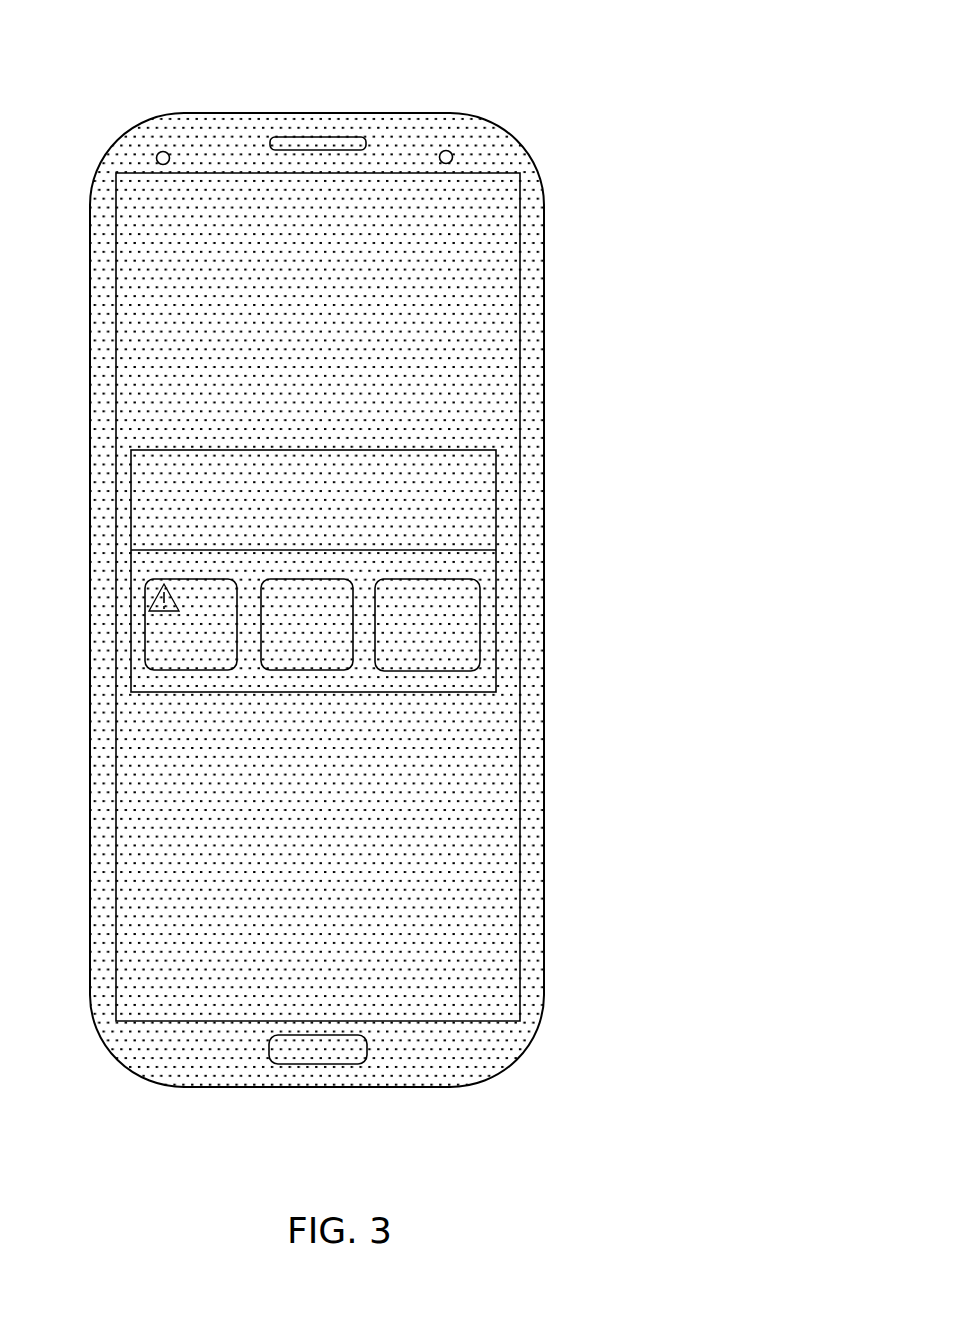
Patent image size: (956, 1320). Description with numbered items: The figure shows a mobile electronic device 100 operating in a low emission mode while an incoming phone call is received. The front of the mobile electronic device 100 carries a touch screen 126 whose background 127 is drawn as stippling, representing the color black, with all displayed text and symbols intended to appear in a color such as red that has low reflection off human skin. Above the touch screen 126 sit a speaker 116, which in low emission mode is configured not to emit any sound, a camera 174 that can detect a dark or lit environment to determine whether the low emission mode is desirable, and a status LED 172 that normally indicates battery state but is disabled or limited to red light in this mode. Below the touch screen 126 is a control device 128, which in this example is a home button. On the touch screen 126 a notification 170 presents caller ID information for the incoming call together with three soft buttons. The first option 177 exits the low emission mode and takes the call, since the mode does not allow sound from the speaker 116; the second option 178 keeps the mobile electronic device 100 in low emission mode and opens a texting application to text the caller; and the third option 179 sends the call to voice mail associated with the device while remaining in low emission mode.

The mobile electronic device 100 is at (568, 165).
The speaker 116 is at (280, 137).
The touch screen 126 is at (502, 268).
The background 127 is at (507, 822).
The control device 128 is at (365, 1052).
The notification 170 is at (496, 571).
The status LED 172 is at (448, 151).
The camera 174 is at (161, 151).
The first option 177 is at (177, 670).
The second option 178 is at (292, 670).
The third option 179 is at (416, 671).